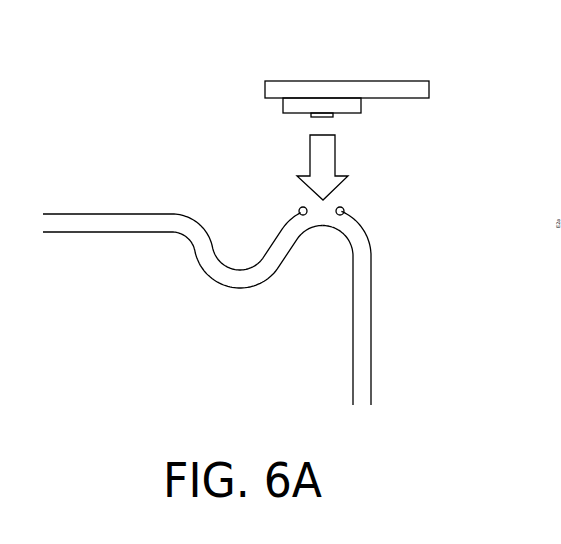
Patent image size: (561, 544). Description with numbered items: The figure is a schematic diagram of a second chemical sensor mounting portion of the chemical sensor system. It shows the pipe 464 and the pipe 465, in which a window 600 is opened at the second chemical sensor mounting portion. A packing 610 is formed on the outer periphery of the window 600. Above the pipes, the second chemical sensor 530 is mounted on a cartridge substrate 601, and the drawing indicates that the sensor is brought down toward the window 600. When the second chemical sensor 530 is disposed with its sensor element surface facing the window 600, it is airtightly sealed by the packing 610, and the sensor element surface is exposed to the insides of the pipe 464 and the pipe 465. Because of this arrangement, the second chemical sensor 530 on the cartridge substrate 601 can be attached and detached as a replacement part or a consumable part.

The cartridge substrate 601 is at (320, 88).
The second chemical sensor 530 is at (322, 116).
The packing 610 is at (297, 206).
The window 600 is at (324, 213).
The pipe 464 is at (103, 232).
The pipe 465 is at (372, 335).